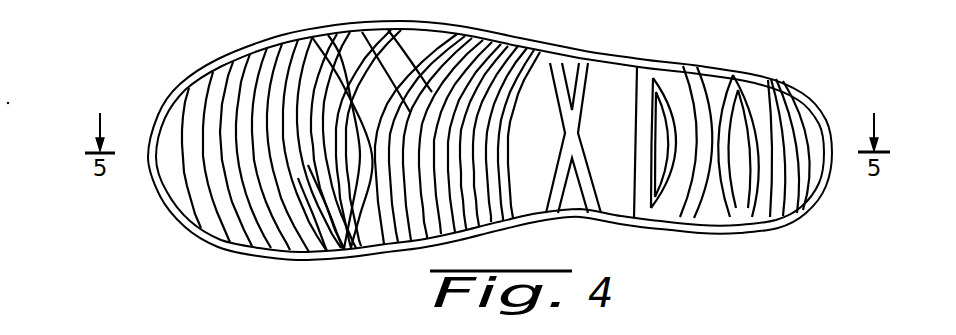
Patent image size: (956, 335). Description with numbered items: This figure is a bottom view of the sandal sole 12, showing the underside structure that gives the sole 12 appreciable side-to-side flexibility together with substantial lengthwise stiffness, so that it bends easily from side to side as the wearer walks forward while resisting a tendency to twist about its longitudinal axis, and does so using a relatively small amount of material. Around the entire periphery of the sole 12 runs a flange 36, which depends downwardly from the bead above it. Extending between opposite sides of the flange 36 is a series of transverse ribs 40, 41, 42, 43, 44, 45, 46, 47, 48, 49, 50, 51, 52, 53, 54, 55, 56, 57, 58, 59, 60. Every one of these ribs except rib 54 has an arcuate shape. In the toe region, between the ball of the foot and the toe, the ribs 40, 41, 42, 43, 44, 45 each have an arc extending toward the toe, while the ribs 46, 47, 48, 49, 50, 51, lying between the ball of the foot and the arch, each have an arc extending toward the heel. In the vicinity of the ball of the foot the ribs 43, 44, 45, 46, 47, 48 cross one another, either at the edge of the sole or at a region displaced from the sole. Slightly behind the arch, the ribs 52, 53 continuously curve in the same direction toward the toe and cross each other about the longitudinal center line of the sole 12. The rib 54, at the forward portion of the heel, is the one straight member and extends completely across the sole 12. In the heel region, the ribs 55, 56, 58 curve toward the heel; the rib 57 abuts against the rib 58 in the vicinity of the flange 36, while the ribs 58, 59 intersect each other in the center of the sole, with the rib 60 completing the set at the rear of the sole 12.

The sole 12 is at (170, 98).
The flange 36 is at (210, 62).
The transverse rib 40 is at (201, 232).
The transverse rib 41 is at (248, 240).
The transverse rib 42 is at (283, 243).
The transverse rib 43 is at (315, 243).
The transverse rib 44 is at (300, 128).
The transverse rib 45 is at (325, 112).
The transverse rib 46 is at (379, 116).
The transverse rib 47 is at (408, 123).
The transverse rib 48 is at (439, 127).
The transverse rib 49 is at (463, 133).
The transverse rib 50 is at (503, 136).
The transverse rib 51 is at (478, 125).
The transverse rib 52 is at (542, 200).
The transverse rib 53 is at (590, 200).
The transverse rib 54 is at (652, 77).
The transverse rib 55 is at (670, 93).
The transverse rib 56 is at (697, 97).
The transverse rib 57 is at (730, 217).
The transverse rib 58 is at (752, 217).
The transverse rib 59 is at (780, 105).
The transverse rib 60 is at (803, 120).